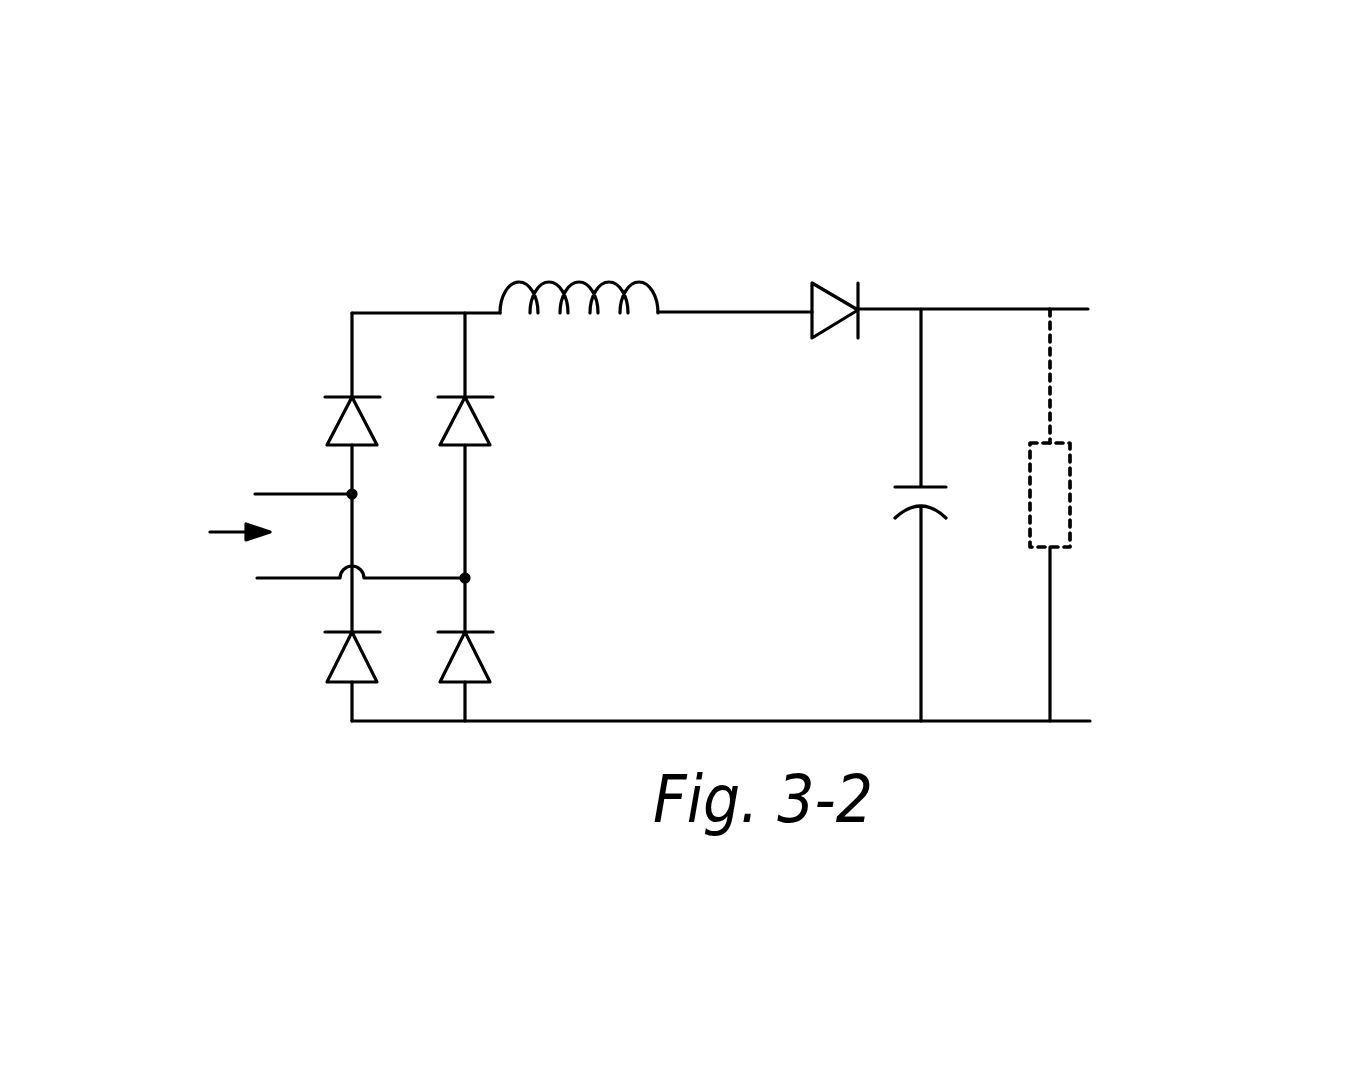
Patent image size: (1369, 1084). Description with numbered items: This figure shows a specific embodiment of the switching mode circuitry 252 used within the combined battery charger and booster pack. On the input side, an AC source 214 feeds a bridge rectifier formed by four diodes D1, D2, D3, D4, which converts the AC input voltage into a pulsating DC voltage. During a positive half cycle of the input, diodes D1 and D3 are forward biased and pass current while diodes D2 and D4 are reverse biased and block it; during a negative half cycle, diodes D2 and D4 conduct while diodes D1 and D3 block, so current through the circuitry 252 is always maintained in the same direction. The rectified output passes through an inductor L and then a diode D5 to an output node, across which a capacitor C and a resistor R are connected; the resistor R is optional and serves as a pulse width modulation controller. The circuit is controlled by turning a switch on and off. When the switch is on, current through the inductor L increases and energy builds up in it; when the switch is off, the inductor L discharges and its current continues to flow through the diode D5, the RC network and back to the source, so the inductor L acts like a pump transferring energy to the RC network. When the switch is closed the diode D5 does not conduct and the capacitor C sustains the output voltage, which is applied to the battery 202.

The switching mode circuitry 252 is at (720, 286).
The AC source 214 is at (159, 538).
The battery 202 is at (1192, 428).
The diode D1 is at (321, 406).
The diode D2 is at (486, 409).
The diode D3 is at (490, 645).
The diode D4 is at (330, 645).
The diode D5 is at (841, 282).
The inductor L is at (579, 274).
The capacitor C is at (917, 515).
The resistor R is at (1035, 515).